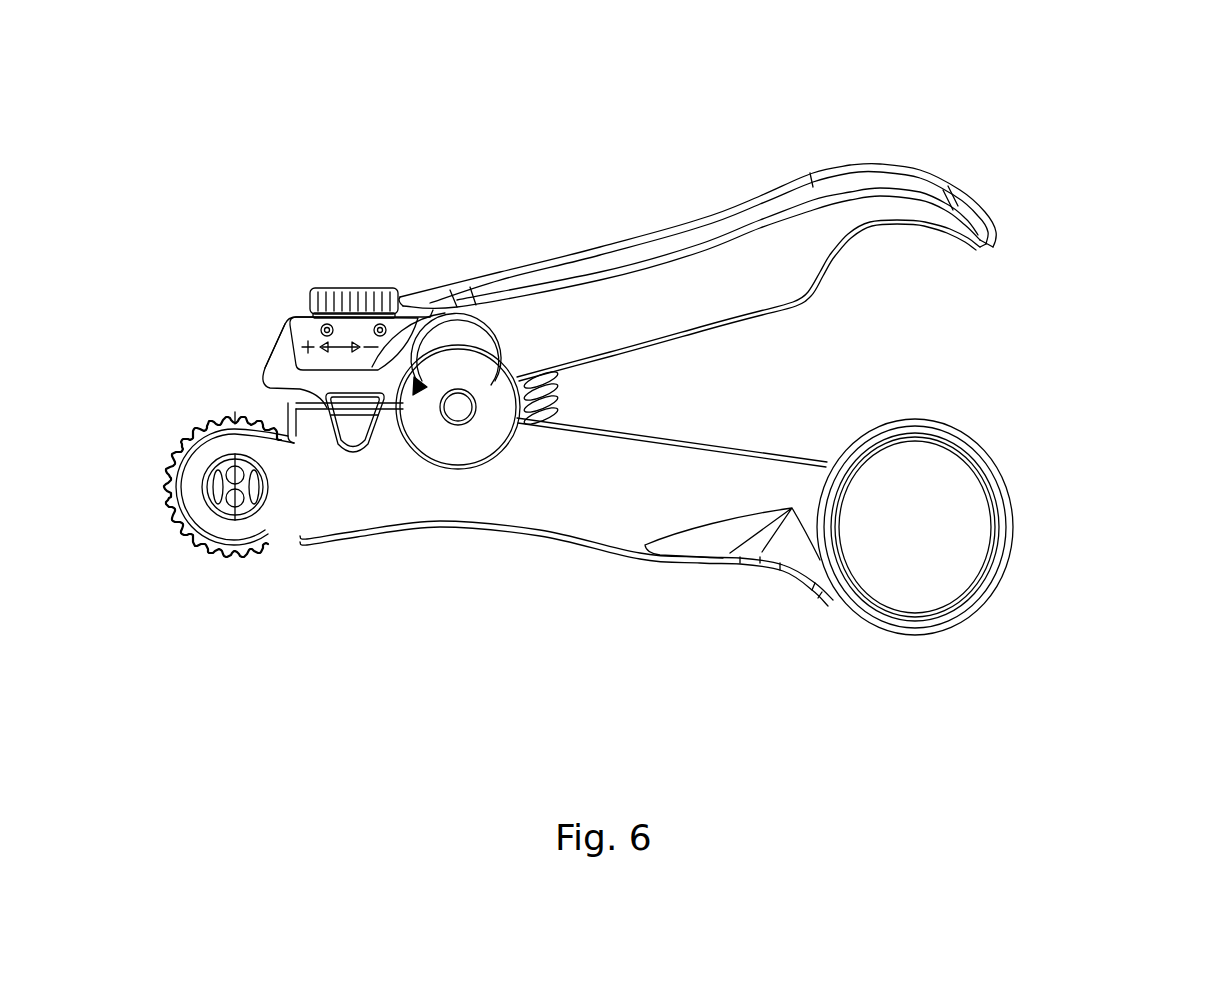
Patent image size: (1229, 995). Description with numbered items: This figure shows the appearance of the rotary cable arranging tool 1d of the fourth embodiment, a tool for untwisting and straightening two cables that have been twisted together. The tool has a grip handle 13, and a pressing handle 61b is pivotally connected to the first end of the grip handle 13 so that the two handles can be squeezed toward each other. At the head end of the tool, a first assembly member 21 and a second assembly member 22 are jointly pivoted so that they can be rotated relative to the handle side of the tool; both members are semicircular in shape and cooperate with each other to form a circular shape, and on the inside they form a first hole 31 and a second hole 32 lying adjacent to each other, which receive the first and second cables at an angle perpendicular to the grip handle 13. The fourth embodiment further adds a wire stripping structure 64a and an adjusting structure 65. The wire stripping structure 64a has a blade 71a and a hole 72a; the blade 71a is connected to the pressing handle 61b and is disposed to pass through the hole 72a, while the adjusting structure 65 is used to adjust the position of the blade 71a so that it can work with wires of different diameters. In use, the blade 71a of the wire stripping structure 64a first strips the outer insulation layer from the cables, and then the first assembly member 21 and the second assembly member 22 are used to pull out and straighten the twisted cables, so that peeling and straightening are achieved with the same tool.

The rotary cable arranging tool 1d is at (1136, 137).
The pressing handle 61b is at (590, 262).
The grip handle 13 is at (545, 523).
The adjusting structure 65 is at (348, 290).
The wire stripping structure 64a is at (263, 298).
The blade 71a is at (357, 437).
The hole 72a is at (290, 433).
The first hole 31 is at (227, 472).
The second hole 32 is at (227, 500).
The first assembly member 21 is at (202, 552).
The second assembly member 22 is at (253, 552).